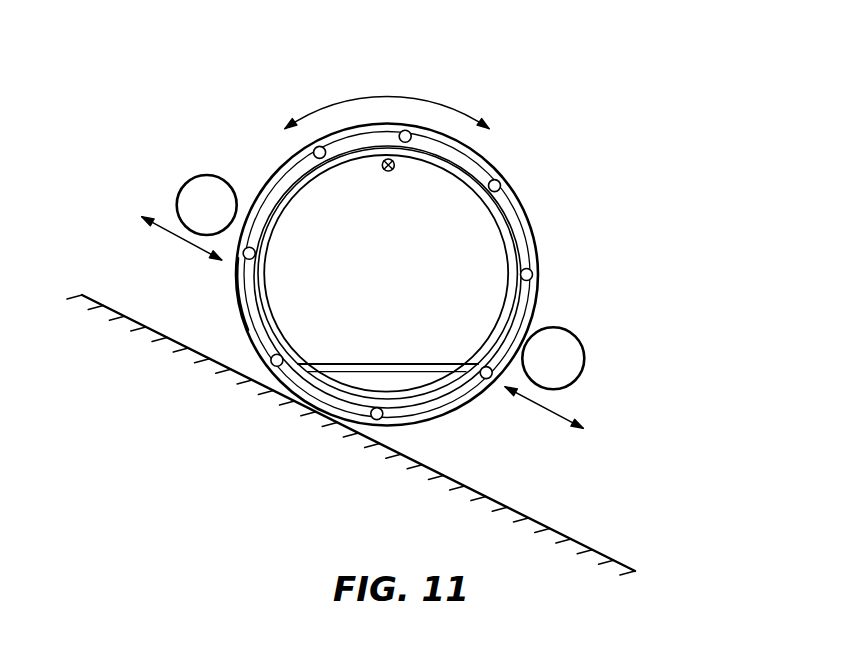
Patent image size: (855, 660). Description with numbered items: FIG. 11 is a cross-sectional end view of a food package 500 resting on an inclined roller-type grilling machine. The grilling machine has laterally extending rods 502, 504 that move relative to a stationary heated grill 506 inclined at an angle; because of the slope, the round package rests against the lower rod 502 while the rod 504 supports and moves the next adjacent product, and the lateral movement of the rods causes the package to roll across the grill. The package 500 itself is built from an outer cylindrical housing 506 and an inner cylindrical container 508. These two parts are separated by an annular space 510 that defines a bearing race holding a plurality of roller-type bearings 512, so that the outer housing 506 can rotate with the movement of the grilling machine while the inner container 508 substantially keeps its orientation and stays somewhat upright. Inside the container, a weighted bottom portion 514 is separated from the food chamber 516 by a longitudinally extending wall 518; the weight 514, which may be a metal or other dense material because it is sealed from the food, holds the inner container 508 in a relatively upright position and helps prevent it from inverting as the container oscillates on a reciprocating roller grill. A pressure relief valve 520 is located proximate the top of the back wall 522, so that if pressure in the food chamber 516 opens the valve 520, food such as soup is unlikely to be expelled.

The package 500 is at (568, 219).
The lower rod 502 is at (572, 362).
The rod 504 is at (208, 197).
The outer cylindrical housing 506 is at (541, 253).
The inner cylindrical container 508 is at (236, 297).
The annular space 510 is at (478, 170).
The roller-type bearings 512 is at (408, 133).
The weighted bottom portion 514 is at (393, 387).
The food chamber 516 is at (477, 228).
The longitudinally extending wall 518 is at (347, 363).
The pressure relief valve 520 is at (383, 170).
The back wall 522 is at (369, 264).